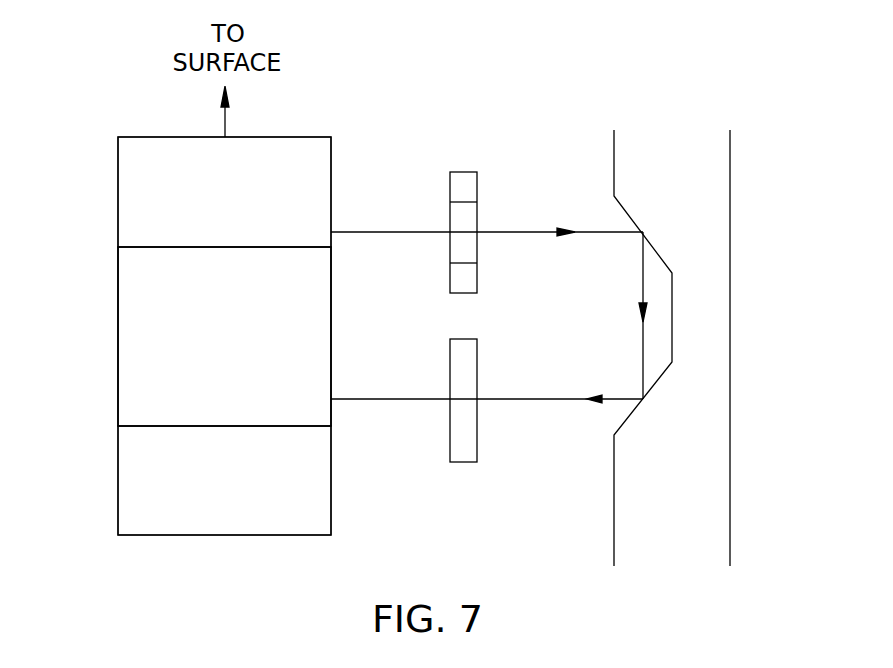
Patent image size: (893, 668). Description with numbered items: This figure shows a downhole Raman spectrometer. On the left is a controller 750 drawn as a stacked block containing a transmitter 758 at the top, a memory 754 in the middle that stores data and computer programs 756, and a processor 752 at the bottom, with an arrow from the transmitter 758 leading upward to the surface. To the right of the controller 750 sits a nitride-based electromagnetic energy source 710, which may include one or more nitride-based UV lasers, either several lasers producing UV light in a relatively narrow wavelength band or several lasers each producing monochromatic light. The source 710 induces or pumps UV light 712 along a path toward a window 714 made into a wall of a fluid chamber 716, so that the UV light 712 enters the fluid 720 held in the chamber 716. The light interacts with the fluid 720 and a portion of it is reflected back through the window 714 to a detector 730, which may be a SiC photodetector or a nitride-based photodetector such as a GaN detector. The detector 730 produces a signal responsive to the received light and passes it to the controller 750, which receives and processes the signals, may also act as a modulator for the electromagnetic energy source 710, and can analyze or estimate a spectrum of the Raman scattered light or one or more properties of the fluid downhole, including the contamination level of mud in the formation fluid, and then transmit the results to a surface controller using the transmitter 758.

The controller 750 is at (183, 535).
The processor 752 is at (118, 467).
The memory 754 is at (118, 313).
The computer programs 756 is at (247, 340).
The transmitter 758 is at (118, 170).
The electromagnetic energy source 710 is at (450, 250).
The detector 730 is at (450, 435).
The UV light 712 is at (517, 231).
The window 714 is at (623, 424).
The fluid 720 is at (693, 164).
The fluid chamber 716 is at (713, 208).